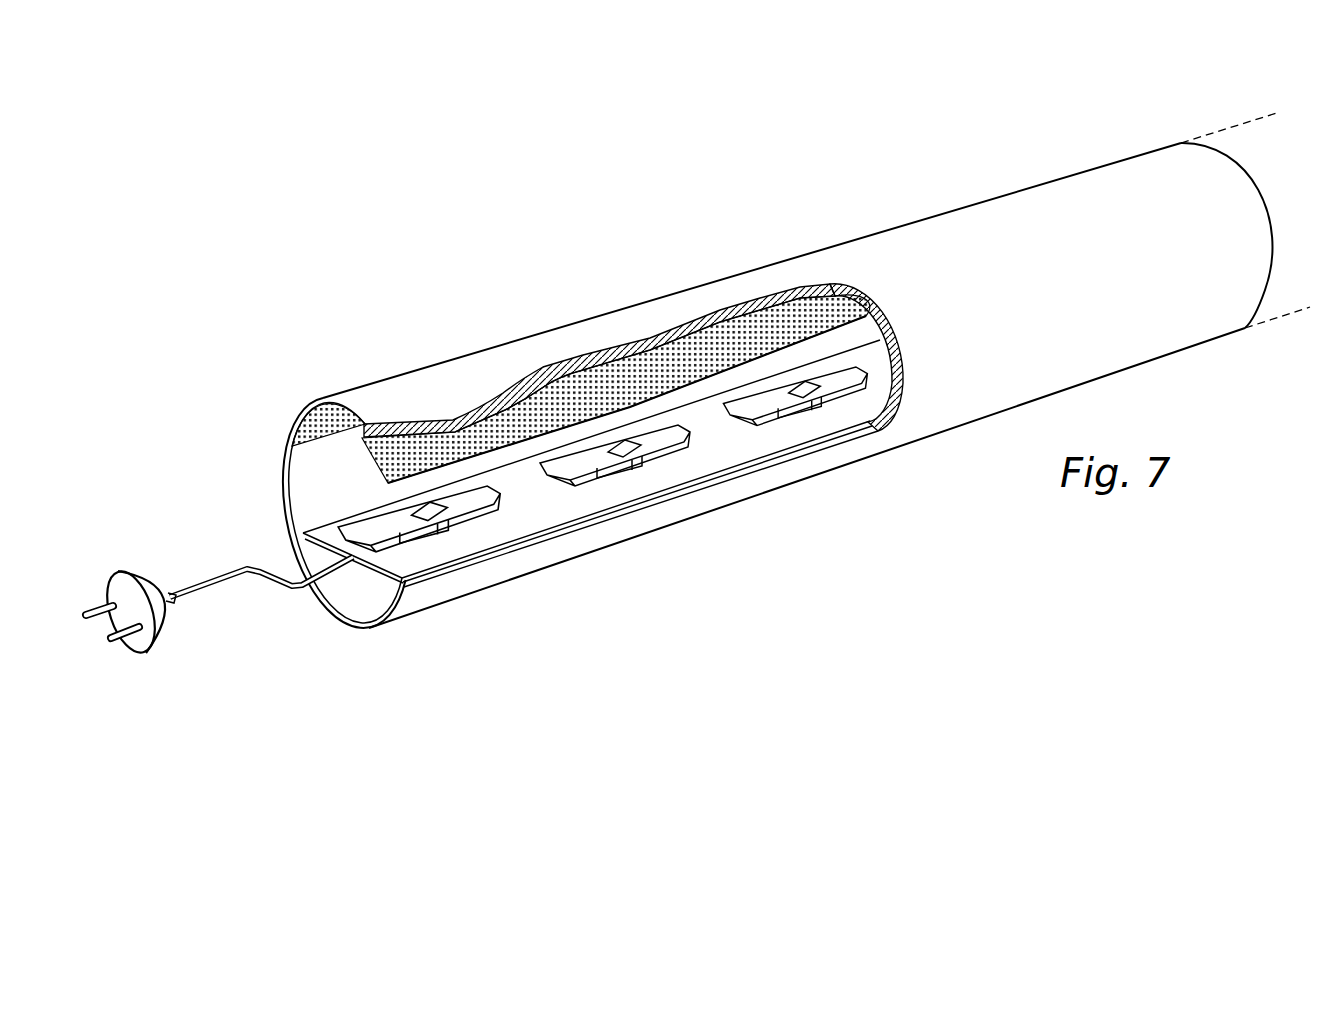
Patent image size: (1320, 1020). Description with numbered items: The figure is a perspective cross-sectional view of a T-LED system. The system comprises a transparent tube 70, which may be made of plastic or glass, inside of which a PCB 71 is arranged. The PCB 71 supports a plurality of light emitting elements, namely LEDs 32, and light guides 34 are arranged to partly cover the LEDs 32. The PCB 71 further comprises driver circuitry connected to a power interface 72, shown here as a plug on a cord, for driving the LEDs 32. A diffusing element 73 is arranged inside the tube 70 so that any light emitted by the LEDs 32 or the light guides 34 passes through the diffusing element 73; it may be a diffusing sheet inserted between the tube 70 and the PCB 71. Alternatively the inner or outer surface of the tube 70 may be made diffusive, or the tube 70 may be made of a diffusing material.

The transparent tube 70 is at (692, 297).
The PCB 71 is at (363, 573).
The power interface 72 is at (162, 628).
The diffusing element 73 is at (576, 352).
The LEDs 32 is at (443, 531).
The light guides 34 is at (583, 474).